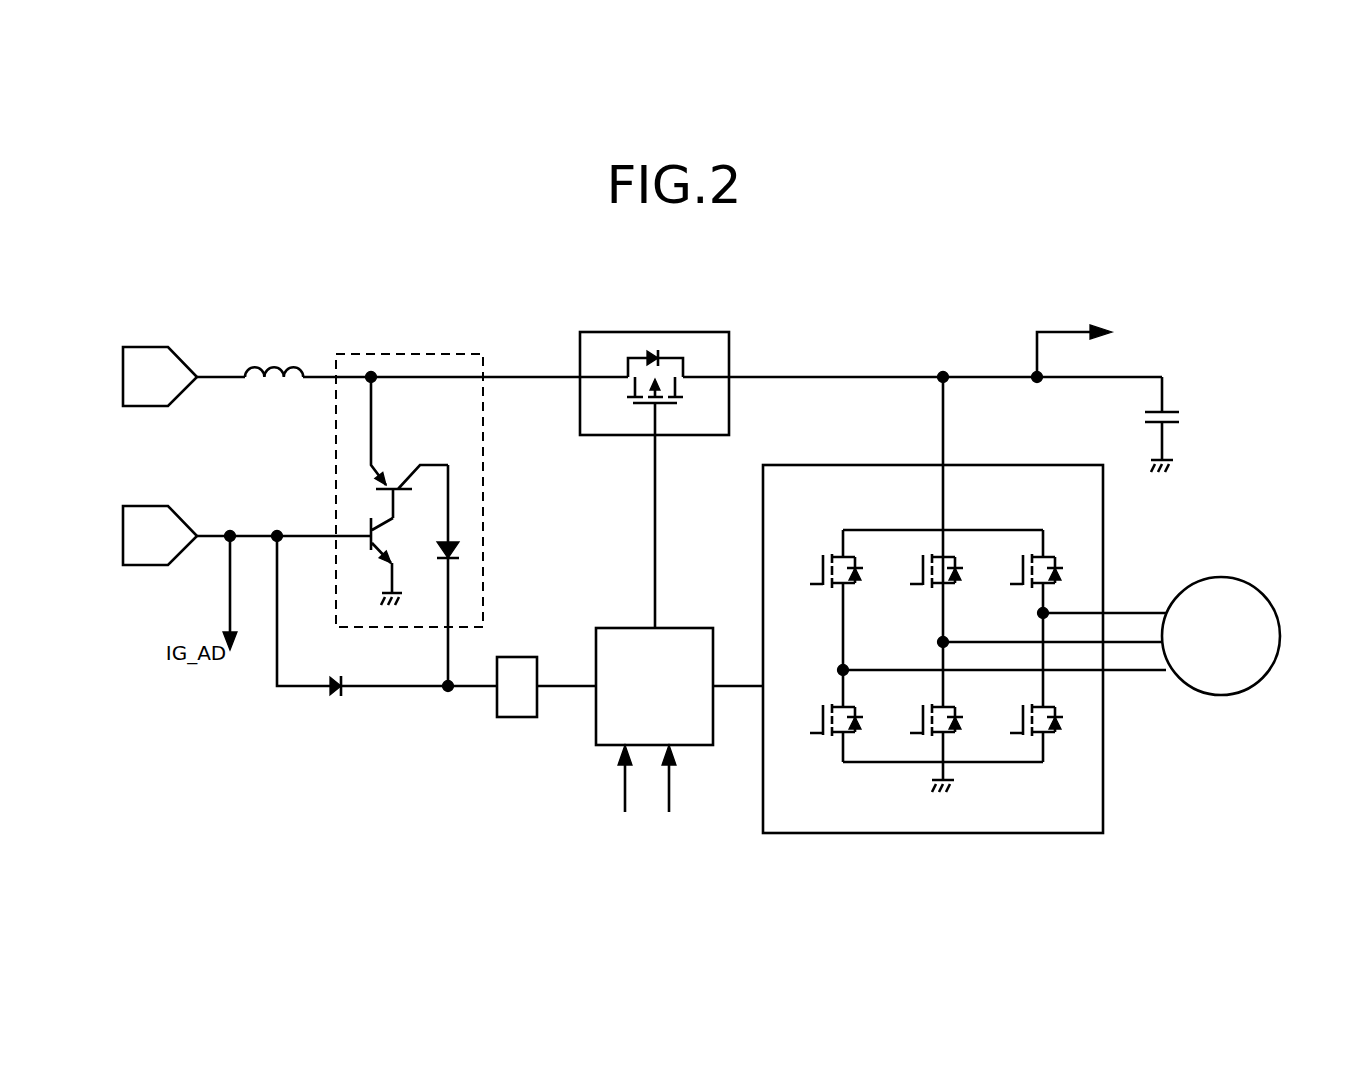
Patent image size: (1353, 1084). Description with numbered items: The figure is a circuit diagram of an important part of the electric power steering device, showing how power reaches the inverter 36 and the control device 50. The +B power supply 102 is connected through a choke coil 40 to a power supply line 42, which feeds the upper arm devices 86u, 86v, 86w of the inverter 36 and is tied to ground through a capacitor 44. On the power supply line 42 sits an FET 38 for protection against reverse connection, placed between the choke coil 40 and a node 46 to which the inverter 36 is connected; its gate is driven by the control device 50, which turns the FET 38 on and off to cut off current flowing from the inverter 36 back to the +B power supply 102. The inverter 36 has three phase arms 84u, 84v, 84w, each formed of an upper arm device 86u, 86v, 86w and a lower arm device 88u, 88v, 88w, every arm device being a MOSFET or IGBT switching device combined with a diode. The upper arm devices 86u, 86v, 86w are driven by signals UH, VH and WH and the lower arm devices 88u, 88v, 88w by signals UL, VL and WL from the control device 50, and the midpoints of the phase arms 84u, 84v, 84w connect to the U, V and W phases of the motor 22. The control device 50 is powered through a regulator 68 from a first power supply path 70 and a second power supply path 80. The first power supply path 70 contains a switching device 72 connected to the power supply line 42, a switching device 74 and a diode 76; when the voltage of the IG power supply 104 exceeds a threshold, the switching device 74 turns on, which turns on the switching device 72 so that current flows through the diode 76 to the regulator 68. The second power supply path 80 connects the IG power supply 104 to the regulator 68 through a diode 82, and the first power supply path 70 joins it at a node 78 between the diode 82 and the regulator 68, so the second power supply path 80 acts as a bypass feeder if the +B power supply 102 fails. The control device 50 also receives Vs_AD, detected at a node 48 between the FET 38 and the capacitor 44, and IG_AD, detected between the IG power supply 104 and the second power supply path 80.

The +B power supply 102 is at (158, 345).
The IG power supply 104 is at (158, 505).
The choke coil 40 is at (293, 370).
The power supply line 42 is at (525, 375).
The FET 38 is at (683, 332).
The node 46 is at (944, 373).
The node 48 is at (1039, 382).
The capacitor 44 is at (1173, 410).
The first power supply path 70 is at (484, 477).
The switching device 72 is at (402, 470).
The switching device 74 is at (369, 574).
The diode 76 is at (473, 556).
The node 78 is at (447, 691).
The second power supply path 80 is at (285, 690).
The diode 82 is at (330, 679).
The regulator 68 is at (511, 718).
The control device 50 is at (609, 628).
The inverter 36 is at (763, 507).
The U phase arm 84u is at (830, 499).
The V phase arm 84v is at (922, 499).
The W phase arm 84w is at (1029, 499).
The upper arm device 86u is at (818, 614).
The upper arm device 86v is at (902, 613).
The upper arm device 86w is at (1062, 539).
The lower arm device 88u is at (831, 755).
The lower arm device 88v is at (923, 755).
The lower arm device 88w is at (1059, 754).
The motor 22 is at (1228, 578).